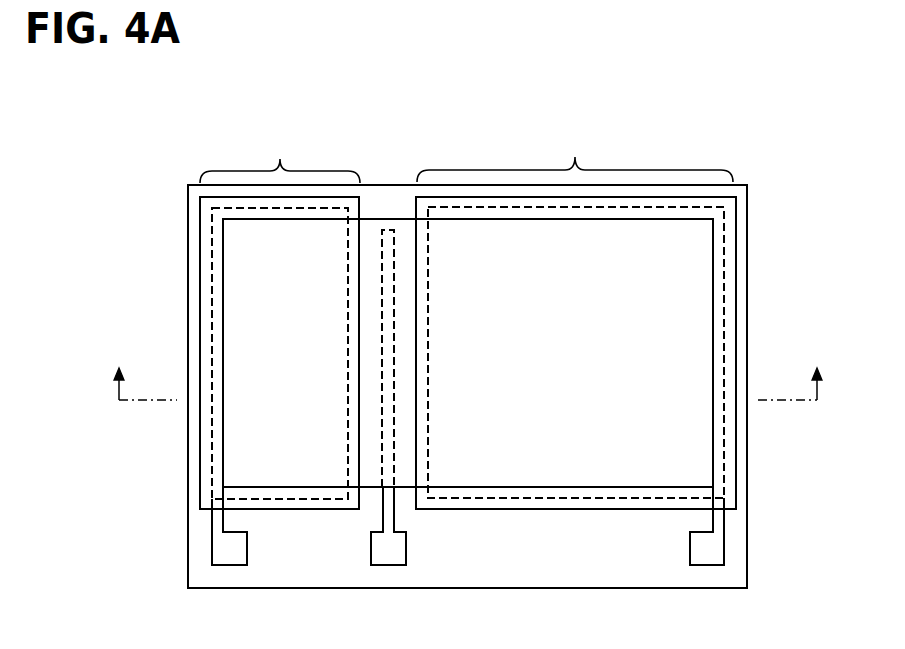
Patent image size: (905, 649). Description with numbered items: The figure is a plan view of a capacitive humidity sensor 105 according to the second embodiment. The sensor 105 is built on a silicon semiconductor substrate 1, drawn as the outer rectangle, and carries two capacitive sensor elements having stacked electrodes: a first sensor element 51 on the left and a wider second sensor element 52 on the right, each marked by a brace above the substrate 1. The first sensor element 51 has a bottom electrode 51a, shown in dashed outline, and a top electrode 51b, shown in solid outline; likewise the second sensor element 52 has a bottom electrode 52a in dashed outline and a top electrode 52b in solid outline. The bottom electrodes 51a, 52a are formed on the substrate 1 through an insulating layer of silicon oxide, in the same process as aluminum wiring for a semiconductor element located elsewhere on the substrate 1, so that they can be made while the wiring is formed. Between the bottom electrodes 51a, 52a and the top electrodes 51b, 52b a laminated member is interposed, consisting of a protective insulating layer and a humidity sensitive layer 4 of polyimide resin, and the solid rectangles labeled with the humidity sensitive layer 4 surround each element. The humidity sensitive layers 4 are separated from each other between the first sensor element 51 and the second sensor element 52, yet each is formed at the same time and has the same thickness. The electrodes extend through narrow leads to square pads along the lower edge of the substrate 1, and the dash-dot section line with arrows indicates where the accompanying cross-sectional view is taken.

The capacitive humidity sensor 105 is at (170, 178).
The silicon semiconductor substrate 1 is at (670, 567).
The humidity sensitive layer 4 is at (205, 247).
The first sensor element 51 is at (280, 156).
The second sensor element 52 is at (575, 154).
The bottom electrode 51a is at (253, 493).
The top electrode 51b is at (312, 473).
The bottom electrode 52a is at (478, 492).
The top electrode 52b is at (603, 473).